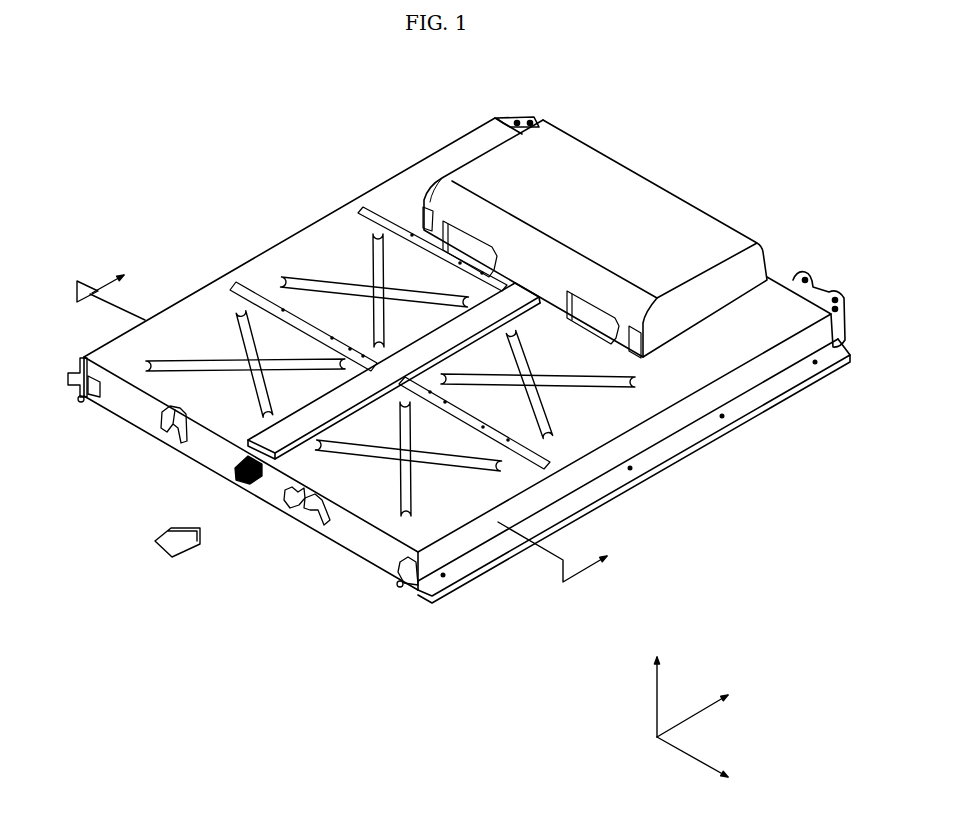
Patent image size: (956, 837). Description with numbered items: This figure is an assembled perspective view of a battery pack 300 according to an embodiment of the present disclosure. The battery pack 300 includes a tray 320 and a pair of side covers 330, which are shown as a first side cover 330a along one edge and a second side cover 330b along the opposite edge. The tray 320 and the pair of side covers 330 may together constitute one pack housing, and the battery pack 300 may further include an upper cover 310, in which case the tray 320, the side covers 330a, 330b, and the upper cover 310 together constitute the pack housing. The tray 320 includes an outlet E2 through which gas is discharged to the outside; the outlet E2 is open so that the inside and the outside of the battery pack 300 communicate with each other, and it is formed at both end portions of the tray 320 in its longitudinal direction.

The battery pack 300 is at (185, 97).
The upper cover 310 is at (464, 353).
The tray 320 is at (245, 477).
The pair of side covers 330 is at (773, 547).
The side cover 330a is at (62, 352).
The side cover 330b is at (634, 471).
The outlet E2 is at (72, 379).